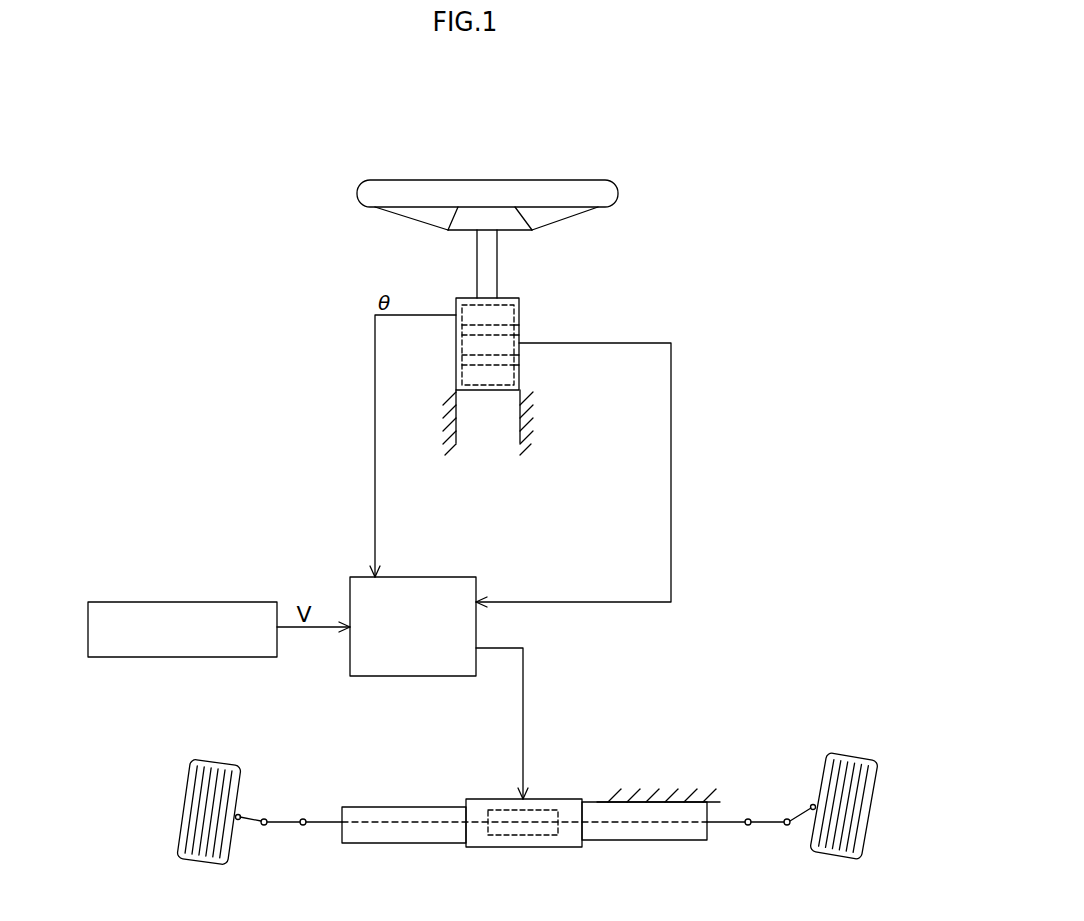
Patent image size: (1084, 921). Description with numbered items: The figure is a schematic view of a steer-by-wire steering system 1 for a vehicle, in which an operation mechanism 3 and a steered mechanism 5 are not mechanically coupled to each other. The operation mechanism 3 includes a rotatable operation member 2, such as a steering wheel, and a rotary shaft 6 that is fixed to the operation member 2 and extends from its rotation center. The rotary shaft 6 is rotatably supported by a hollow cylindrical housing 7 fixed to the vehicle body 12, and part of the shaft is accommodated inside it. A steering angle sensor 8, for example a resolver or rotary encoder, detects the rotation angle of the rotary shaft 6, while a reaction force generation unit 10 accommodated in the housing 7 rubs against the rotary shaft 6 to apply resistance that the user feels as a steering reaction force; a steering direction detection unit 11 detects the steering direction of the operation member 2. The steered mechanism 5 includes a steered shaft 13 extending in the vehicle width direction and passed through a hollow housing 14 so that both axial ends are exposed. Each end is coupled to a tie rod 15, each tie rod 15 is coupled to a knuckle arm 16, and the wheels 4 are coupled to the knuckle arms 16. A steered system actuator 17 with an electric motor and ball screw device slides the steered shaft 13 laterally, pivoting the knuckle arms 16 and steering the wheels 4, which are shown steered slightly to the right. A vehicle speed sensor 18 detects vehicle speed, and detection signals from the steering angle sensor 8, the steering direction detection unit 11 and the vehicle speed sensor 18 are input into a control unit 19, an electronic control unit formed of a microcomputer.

The steering system 1 is at (675, 262).
The operation member 2 is at (570, 180).
The operation mechanism 3 is at (445, 267).
The wheels 4 is at (198, 865).
The steered mechanism 5 is at (748, 787).
The rotary shaft 6 is at (497, 265).
The housing 7 is at (463, 360).
The steering angle sensor 8 is at (523, 305).
The reaction force generation unit 10 is at (523, 362).
The steering direction detection unit 11 is at (523, 333).
The vehicle body 12 is at (517, 428).
The steered shaft 13 is at (322, 824).
The housing 14 is at (433, 843).
The tie rods 15 is at (283, 824).
The knuckle arms 16 is at (250, 818).
The steered system actuator 17 is at (525, 837).
The vehicle speed sensor 18 is at (193, 602).
The control unit 19 is at (457, 577).